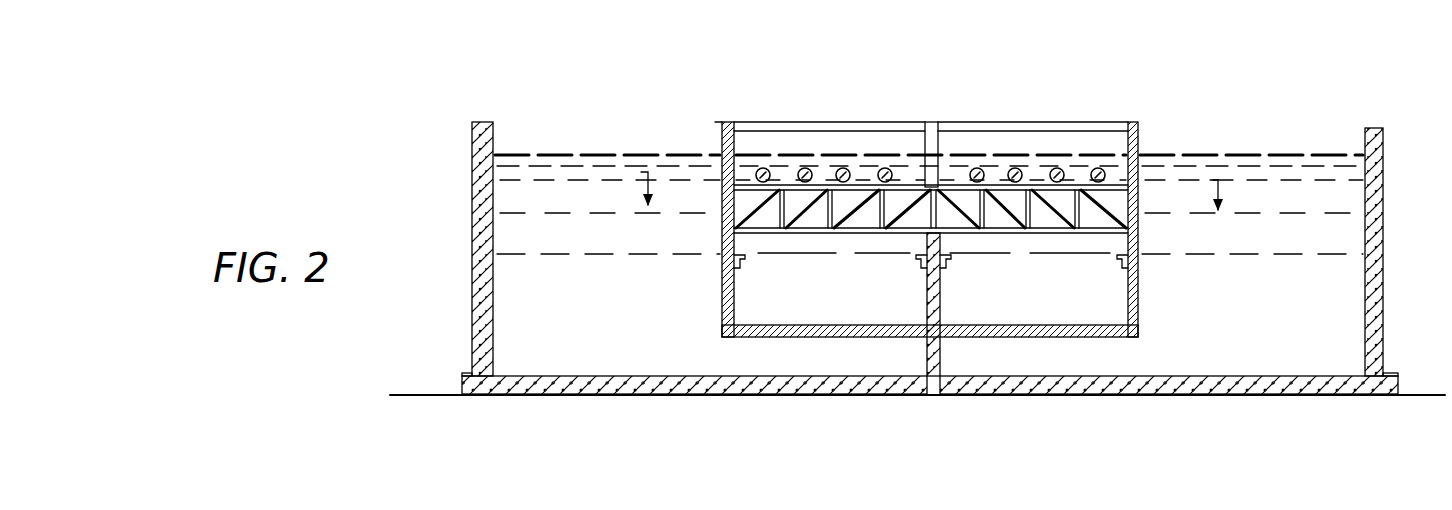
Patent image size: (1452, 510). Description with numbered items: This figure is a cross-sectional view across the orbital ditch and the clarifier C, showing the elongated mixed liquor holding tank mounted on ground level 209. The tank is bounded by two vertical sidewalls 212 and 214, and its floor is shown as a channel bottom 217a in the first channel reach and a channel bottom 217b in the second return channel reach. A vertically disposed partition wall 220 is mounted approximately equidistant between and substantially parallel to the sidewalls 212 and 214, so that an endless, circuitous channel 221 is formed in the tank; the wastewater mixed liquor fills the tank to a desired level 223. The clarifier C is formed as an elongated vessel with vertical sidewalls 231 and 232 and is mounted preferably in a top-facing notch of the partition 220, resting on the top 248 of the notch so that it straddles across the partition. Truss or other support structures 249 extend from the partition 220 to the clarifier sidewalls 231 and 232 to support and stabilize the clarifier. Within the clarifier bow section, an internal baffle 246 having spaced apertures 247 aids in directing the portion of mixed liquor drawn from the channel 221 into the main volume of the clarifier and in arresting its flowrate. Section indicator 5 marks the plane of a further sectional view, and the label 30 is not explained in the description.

The ground level 209 is at (412, 392).
The vertical sidewall 212 is at (1385, 152).
The vertical sidewall 214 is at (490, 152).
The channel bottom 217a is at (563, 378).
The channel bottom 217b is at (1285, 378).
The partition wall 220 is at (943, 132).
The circuitous channel 221 is at (540, 239).
The desired level 223 is at (1265, 158).
The clarifier sidewall 231 is at (722, 138).
The clarifier sidewall 232 is at (1140, 143).
The container 30 is at (733, 118).
The clarifier C is at (1107, 118).
The internal baffle 246 is at (745, 168).
The spaced apertures 247 is at (885, 168).
The top of notch 248 is at (943, 217).
The truss support structures 249 is at (776, 233).
The section line 5 is at (933, 209).